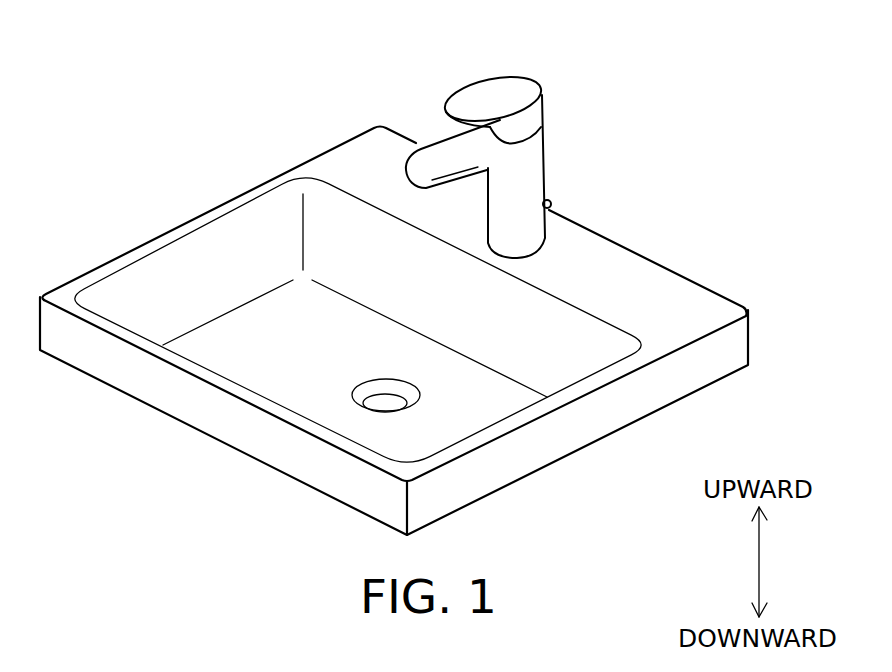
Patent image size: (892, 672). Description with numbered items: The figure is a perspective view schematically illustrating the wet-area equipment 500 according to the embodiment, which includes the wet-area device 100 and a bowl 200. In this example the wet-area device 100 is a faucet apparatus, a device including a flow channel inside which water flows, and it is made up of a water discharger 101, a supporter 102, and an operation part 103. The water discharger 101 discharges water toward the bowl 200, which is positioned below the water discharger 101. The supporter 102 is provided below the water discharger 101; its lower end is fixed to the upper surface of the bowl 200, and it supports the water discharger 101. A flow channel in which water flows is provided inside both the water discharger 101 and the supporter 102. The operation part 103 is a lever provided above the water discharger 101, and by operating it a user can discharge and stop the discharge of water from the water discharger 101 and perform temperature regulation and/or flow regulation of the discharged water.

The wet-area device 100 is at (512, 138).
The water discharger 101 is at (455, 148).
The supporter 102 is at (527, 187).
The operation part 103 is at (485, 92).
The bowl 200 is at (690, 295).
The wet-area equipment 500 is at (407, 277).